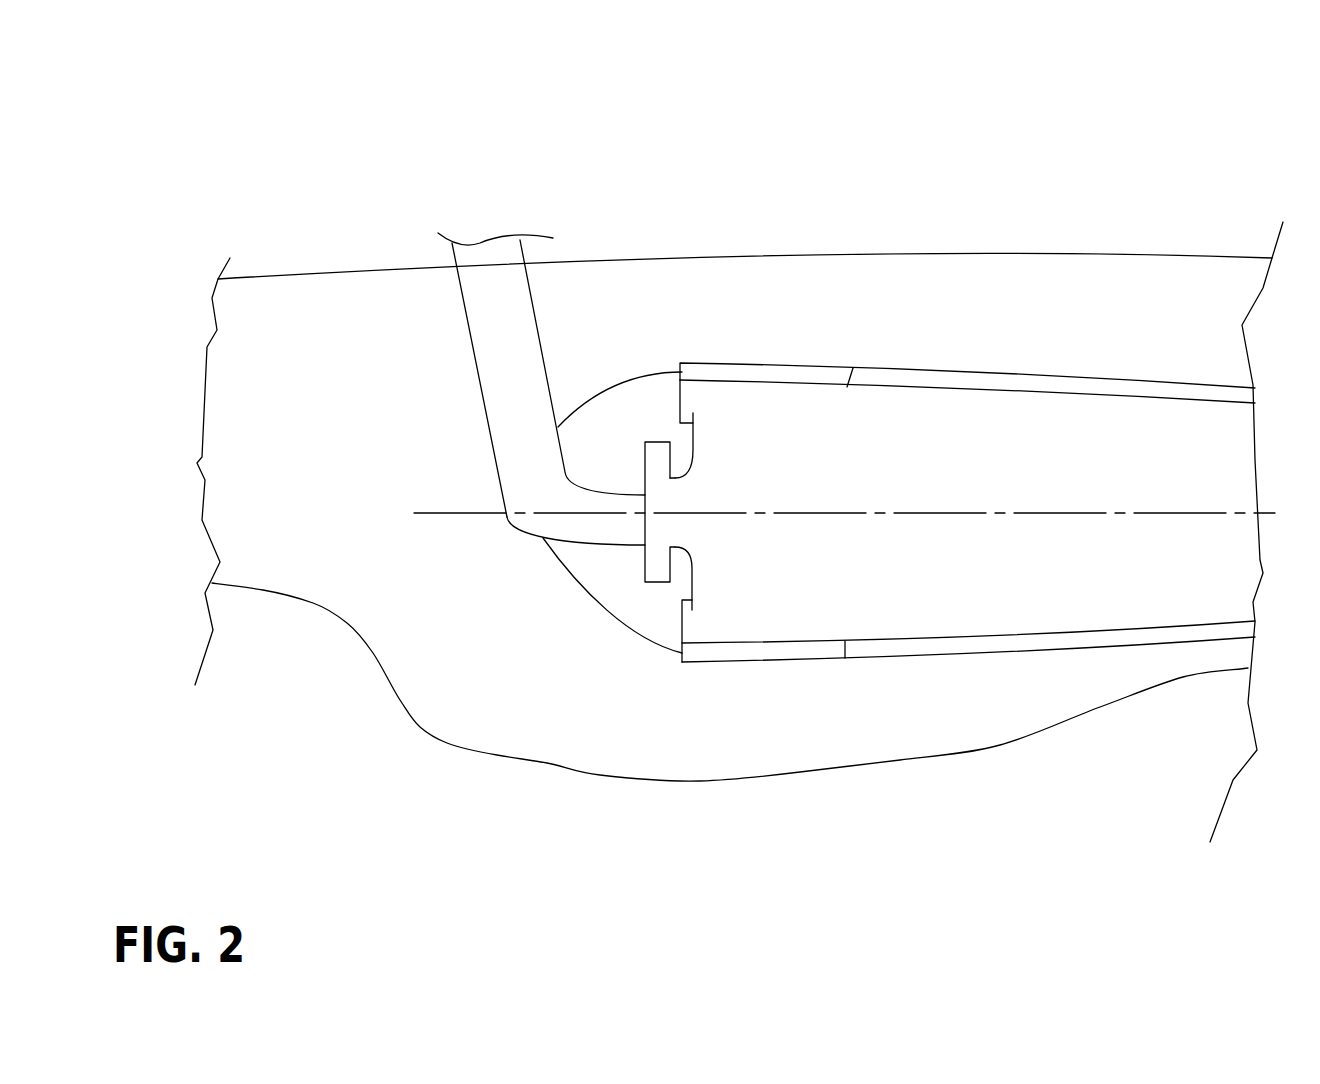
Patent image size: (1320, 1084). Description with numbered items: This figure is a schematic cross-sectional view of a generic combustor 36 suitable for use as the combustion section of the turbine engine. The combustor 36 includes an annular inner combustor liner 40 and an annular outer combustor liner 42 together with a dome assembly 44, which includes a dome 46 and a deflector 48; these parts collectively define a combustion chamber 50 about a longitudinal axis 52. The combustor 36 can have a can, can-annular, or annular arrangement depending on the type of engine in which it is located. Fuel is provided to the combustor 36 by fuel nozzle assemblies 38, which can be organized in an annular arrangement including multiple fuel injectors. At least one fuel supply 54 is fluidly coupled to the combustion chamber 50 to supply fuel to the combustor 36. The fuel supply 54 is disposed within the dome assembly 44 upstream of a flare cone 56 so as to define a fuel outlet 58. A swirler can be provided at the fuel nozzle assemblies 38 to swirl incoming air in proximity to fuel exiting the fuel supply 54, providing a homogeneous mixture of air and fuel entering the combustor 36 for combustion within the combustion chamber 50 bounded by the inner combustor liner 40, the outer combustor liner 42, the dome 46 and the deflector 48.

The combustor 36 is at (1170, 108).
The fuel nozzle assemblies 38 is at (617, 563).
The annular inner combustor liner 40 is at (965, 641).
The annular outer combustor liner 42 is at (1020, 387).
The dome assembly 44 is at (553, 555).
The dome 46 is at (618, 385).
The deflector 48 is at (682, 622).
The combustion chamber 50 is at (1127, 418).
The longitudinal axis 52 is at (1050, 511).
The fuel supply 54 is at (508, 522).
The flare cone 56 is at (693, 460).
The fuel outlet 58 is at (693, 532).